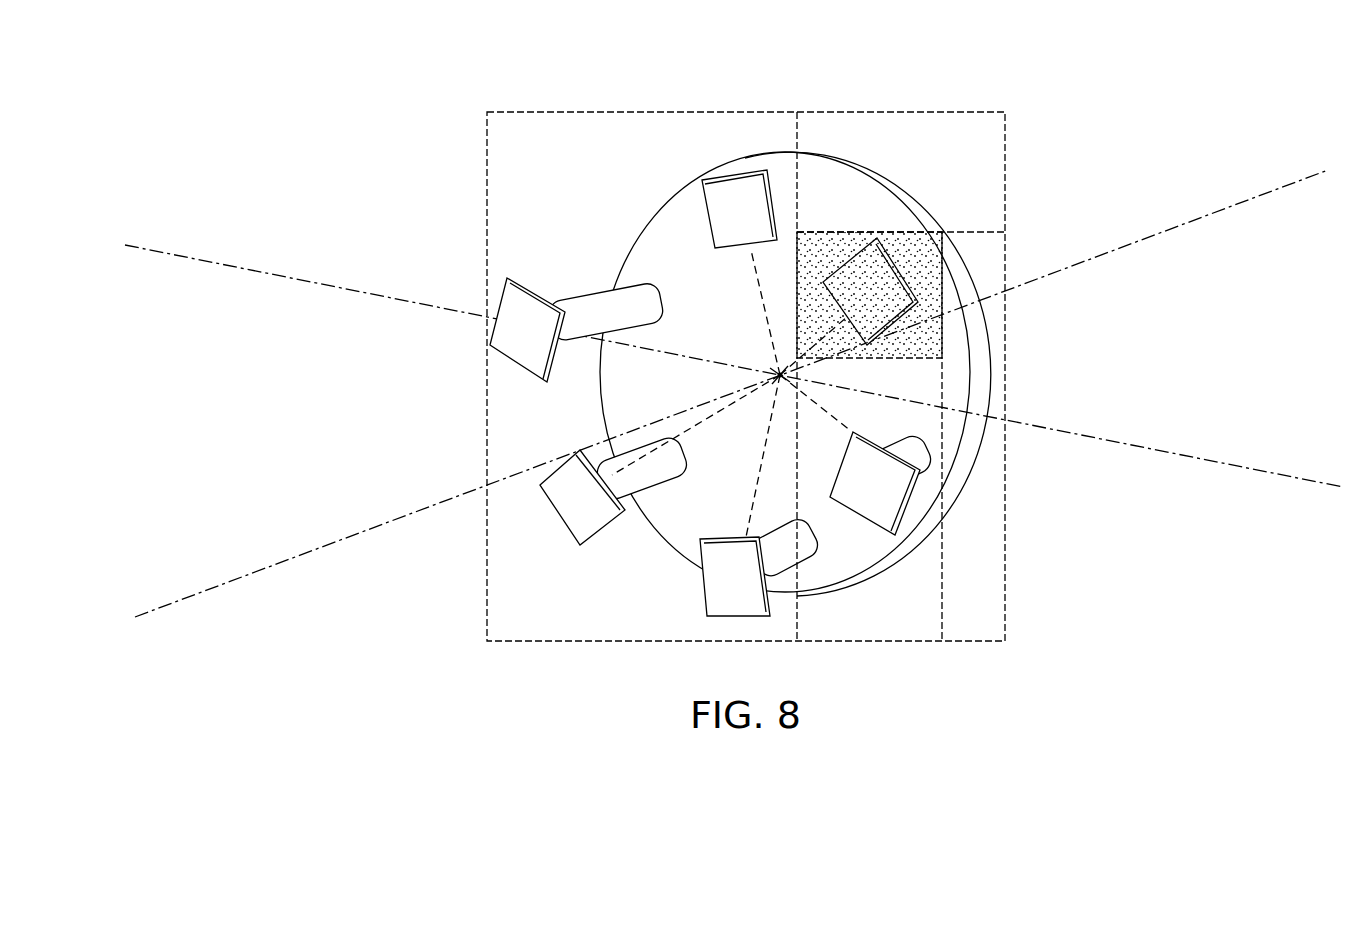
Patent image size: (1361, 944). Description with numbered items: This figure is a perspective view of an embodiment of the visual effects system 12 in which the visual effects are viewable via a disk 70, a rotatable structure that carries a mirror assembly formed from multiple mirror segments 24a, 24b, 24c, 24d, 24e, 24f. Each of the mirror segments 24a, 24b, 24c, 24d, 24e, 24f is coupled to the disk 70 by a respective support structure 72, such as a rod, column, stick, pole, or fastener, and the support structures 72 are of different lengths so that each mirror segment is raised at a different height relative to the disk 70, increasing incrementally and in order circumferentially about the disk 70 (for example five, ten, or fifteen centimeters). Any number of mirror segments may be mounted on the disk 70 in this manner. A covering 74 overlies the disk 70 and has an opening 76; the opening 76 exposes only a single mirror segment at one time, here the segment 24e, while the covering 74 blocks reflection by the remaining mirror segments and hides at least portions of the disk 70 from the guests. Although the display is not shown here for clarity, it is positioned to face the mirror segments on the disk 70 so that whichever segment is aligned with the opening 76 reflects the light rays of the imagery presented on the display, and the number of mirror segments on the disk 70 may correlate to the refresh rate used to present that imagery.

The visual effects system 12 is at (392, 104).
The mirror segment 24a is at (577, 333).
The mirror segment 24b is at (552, 512).
The mirror segment 24c is at (700, 578).
The mirror segment 24d is at (852, 514).
The mirror segment 24e is at (845, 262).
The mirror segment 24f is at (707, 214).
The disk 70 is at (661, 197).
The support structure 72 is at (586, 312).
The covering 74 is at (487, 195).
The opening 76 is at (940, 263).